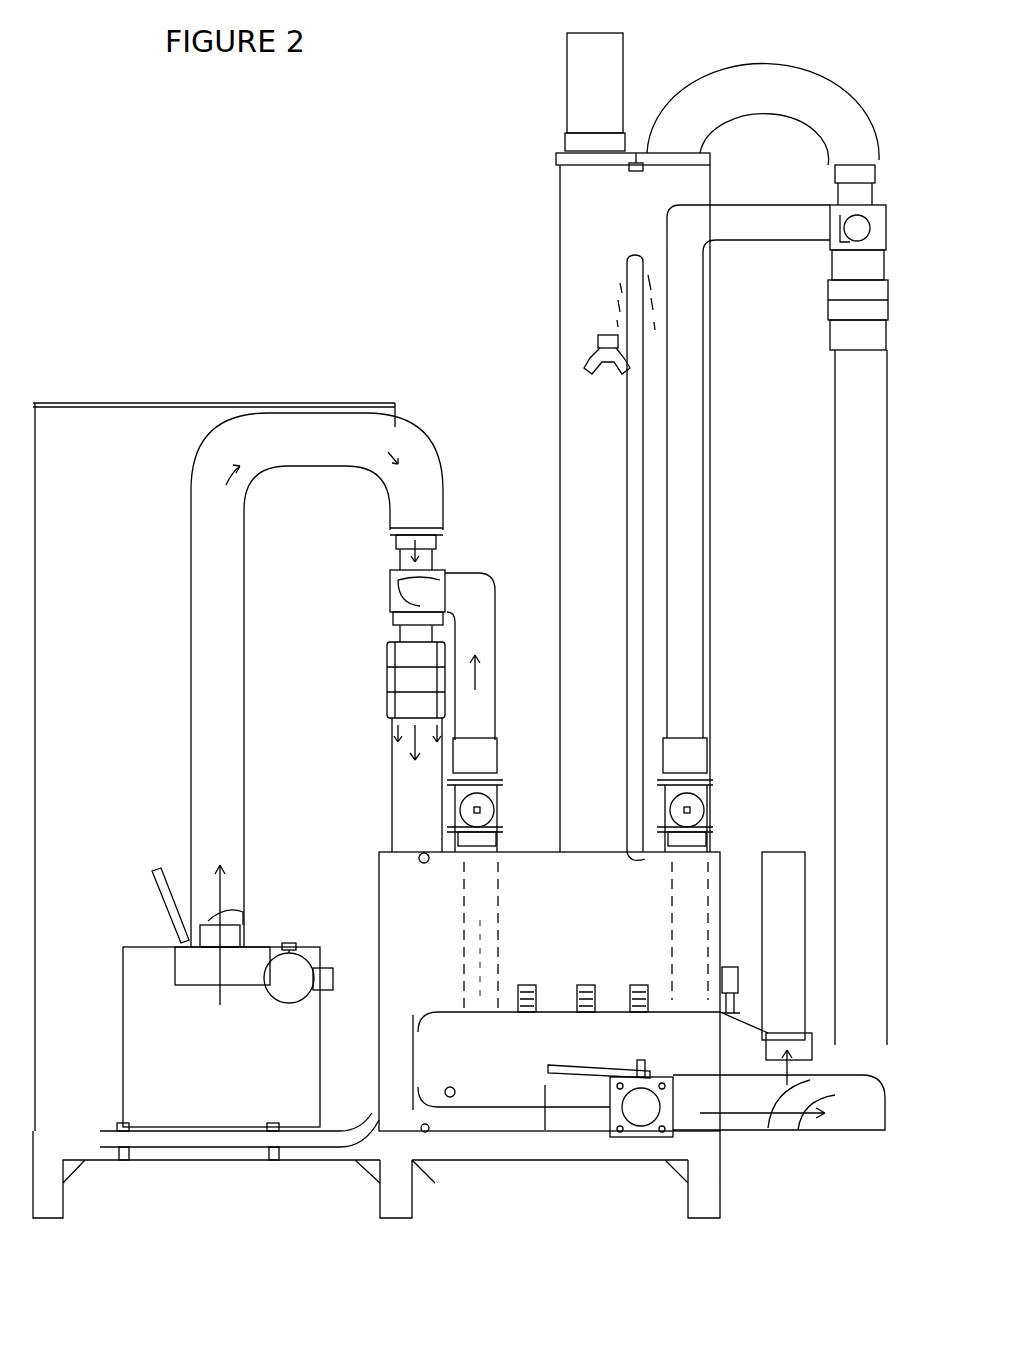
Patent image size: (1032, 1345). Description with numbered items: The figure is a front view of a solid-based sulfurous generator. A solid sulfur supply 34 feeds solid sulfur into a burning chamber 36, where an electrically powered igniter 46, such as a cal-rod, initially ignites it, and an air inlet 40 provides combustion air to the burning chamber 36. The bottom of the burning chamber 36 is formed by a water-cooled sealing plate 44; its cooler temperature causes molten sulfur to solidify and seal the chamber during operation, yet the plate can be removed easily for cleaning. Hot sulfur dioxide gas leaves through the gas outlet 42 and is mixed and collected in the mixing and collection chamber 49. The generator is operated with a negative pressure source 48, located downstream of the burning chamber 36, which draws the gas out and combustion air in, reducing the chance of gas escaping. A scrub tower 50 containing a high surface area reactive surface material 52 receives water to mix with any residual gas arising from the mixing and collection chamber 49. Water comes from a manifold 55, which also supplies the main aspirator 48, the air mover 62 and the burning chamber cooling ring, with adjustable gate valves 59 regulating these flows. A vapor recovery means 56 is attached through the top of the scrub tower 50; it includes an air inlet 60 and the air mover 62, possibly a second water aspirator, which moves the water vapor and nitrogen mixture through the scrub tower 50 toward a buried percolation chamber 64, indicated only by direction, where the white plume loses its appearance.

The solid sulfur supply 34 is at (214, 810).
The burning chamber 36 is at (221, 996).
The air inlet 40 is at (298, 973).
The gas outlet 42 is at (317, 680).
The water-cooled sealing plate 44 is at (187, 1150).
The electrically powered igniter 46 is at (163, 905).
The negative pressure source 48 is at (442, 636).
The mixing and collection chamber 49 is at (549, 1035).
The scrub tower 50 is at (693, 502).
The reactive surface material 52 is at (614, 557).
The manifold 55 is at (619, 1052).
The vapor recovery means 56 is at (763, 134).
The adjustable gate valves 59 is at (599, 795).
The air inlet 60 is at (595, 92).
The air mover 62 is at (878, 277).
The percolation chamber 64 is at (868, 995).